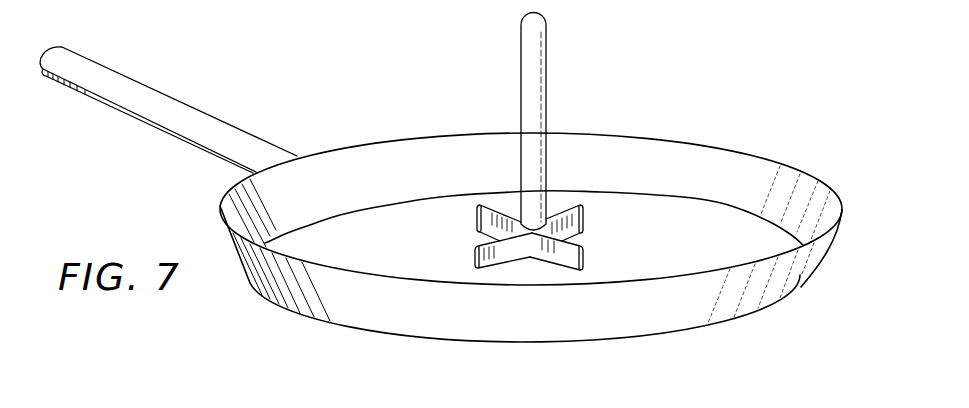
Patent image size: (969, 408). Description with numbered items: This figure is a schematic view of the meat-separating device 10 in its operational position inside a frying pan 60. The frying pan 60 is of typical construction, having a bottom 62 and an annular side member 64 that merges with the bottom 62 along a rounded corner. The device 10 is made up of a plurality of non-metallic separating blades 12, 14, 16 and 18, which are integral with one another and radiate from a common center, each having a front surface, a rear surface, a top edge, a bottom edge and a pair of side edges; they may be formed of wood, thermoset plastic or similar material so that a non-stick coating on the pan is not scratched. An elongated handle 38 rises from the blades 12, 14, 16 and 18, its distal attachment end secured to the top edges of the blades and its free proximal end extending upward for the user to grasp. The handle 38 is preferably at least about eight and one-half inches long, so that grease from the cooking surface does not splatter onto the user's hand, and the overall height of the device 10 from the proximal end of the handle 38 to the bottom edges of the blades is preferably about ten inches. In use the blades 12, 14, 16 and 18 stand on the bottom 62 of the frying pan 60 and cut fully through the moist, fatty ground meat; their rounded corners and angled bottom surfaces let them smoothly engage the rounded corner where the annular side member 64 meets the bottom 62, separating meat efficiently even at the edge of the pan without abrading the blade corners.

The device 10 is at (550, 144).
The separating blade 12 is at (474, 266).
The separating blade 14 is at (575, 258).
The separating blade 16 is at (578, 217).
The separating blade 18 is at (492, 216).
The elongated handle 38 is at (537, 50).
The frying pan 60 is at (441, 194).
The bottom 62 is at (403, 220).
The annular side member 64 is at (343, 160).